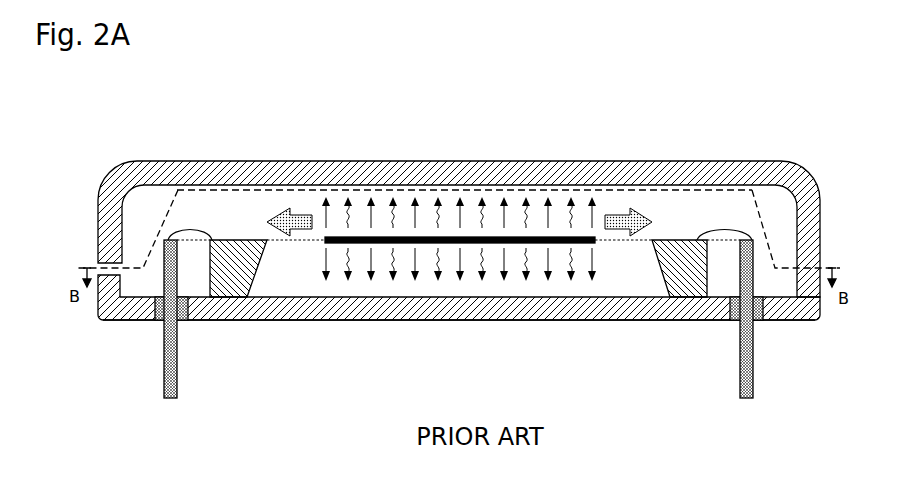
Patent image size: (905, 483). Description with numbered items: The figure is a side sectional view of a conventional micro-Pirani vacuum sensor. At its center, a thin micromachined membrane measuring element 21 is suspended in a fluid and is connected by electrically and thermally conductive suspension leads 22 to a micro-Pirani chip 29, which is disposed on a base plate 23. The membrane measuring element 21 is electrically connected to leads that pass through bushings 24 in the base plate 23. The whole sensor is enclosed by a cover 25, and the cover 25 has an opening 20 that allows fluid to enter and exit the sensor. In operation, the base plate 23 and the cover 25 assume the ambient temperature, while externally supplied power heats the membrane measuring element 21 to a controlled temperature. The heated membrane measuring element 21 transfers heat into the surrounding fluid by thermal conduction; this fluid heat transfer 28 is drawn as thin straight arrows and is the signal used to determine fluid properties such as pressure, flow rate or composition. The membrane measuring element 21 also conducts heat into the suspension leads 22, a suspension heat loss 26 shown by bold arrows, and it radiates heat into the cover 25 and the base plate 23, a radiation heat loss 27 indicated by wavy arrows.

The opening 20 is at (117, 322).
The membrane measuring element 21 is at (593, 237).
The suspension leads 22 is at (302, 242).
The base plate 23 is at (442, 308).
The bushings 24 is at (180, 322).
The cover 25 is at (300, 159).
The suspension heat loss 26 is at (282, 213).
The radiation heat loss 27 is at (440, 212).
The fluid heat transfer 28 is at (363, 197).
The micro-Pirani chip 29 is at (226, 238).